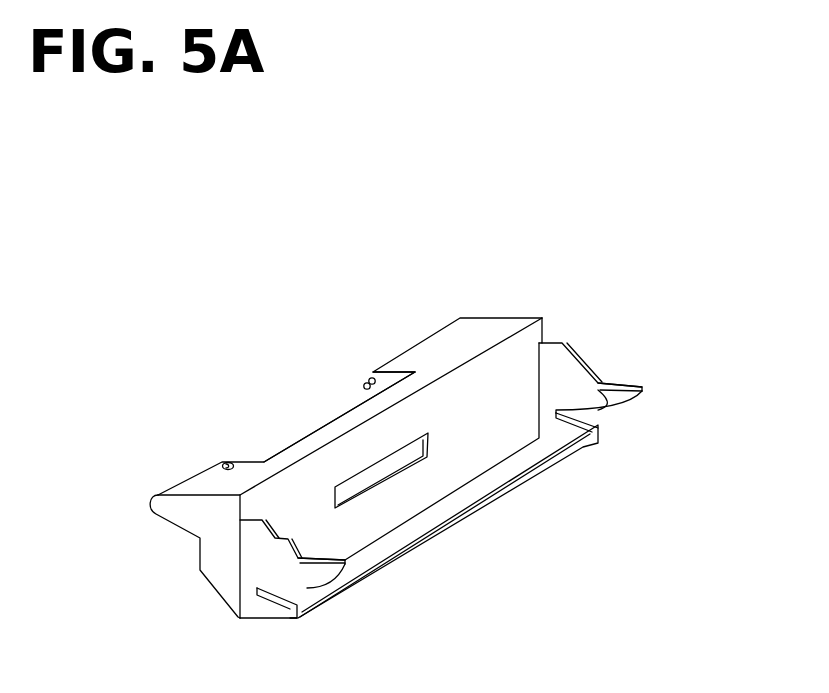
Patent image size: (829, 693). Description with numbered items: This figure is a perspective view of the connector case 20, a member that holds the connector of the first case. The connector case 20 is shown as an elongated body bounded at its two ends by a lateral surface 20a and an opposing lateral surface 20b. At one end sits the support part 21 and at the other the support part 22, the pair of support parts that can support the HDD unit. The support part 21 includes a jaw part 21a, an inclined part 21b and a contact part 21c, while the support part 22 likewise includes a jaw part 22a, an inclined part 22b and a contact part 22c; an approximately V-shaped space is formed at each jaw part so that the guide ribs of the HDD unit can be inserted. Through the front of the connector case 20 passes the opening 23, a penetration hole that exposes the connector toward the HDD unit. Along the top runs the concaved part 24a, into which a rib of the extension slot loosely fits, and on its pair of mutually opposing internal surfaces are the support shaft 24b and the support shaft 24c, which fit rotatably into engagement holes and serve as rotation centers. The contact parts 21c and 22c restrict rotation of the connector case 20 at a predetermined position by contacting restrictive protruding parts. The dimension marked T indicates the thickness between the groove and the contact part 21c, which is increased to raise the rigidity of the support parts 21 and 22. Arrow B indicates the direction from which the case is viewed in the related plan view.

The connector case 20 is at (285, 327).
The lateral surface 20a is at (181, 509).
The lateral surface 20b is at (515, 316).
The support part 21 is at (257, 573).
The jaw part 21a is at (258, 589).
The inclined part 21b is at (313, 588).
The contact part 21c is at (316, 548).
The support part 22 is at (572, 388).
The jaw part 22a is at (575, 431).
The inclined part 22b is at (611, 413).
The contact part 22c is at (619, 372).
The opening 23 is at (382, 466).
The concaved part 24a is at (326, 418).
The support shaft 24b is at (229, 459).
The support shaft 24c is at (366, 383).
The thickness T is at (300, 586).
The arrow B is at (528, 607).